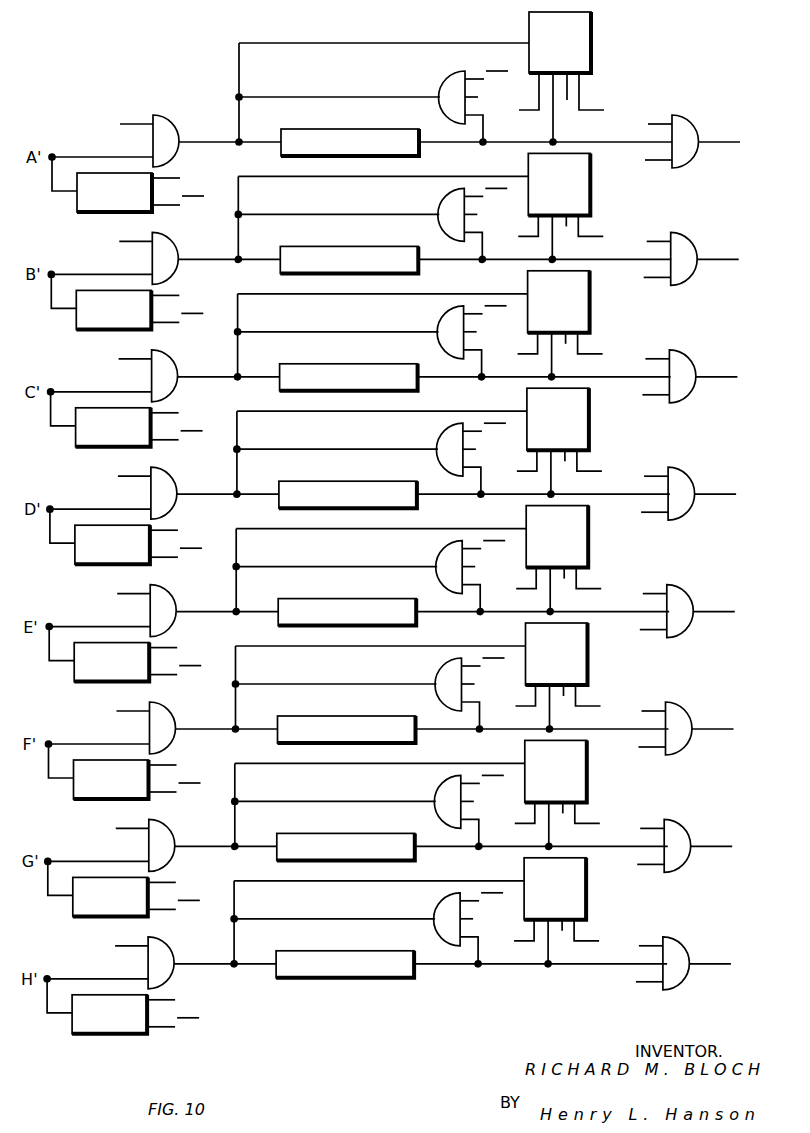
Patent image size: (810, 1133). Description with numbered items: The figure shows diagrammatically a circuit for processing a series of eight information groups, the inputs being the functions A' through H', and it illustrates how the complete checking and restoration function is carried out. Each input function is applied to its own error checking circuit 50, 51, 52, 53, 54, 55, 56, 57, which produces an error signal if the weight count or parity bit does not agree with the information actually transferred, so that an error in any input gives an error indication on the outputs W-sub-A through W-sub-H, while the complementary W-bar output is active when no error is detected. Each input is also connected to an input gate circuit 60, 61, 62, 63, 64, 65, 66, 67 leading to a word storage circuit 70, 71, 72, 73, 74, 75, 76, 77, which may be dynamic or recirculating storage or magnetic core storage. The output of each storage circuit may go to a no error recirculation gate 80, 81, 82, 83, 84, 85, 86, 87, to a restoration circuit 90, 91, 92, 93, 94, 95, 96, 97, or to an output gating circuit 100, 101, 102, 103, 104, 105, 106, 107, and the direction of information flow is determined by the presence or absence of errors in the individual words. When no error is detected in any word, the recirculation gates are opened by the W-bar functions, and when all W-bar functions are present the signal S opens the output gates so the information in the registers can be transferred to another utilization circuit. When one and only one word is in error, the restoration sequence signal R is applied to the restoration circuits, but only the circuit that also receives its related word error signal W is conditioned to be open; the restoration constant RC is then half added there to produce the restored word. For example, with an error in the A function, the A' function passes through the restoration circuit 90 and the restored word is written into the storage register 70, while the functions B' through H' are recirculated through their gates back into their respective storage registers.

The error checking circuit 50 is at (118, 194).
The error checking circuit 51 is at (117, 311).
The error checking circuit 52 is at (117, 429).
The error checking circuit 53 is at (116, 546).
The error checking circuit 54 is at (115, 664).
The error checking circuit 55 is at (114, 781).
The error checking circuit 56 is at (114, 898).
The error checking circuit 57 is at (113, 1016).
The input gate circuit 60 is at (145, 137).
The input gate circuit 61 is at (144, 254).
The input gate circuit 62 is at (144, 372).
The input gate circuit 63 is at (143, 489).
The input gate circuit 64 is at (142, 607).
The input gate circuit 65 is at (142, 724).
The input gate circuit 66 is at (141, 841).
The input gate circuit 67 is at (140, 959).
The word storage circuit 70 is at (350, 129).
The word storage circuit 71 is at (349, 246).
The word storage circuit 72 is at (349, 364).
The word storage circuit 73 is at (348, 481).
The word storage circuit 74 is at (347, 599).
The word storage circuit 75 is at (347, 716).
The word storage circuit 76 is at (346, 833).
The word storage circuit 77 is at (345, 951).
The no error recirculation gate 80 is at (468, 100).
The no error recirculation gate 81 is at (467, 217).
The no error recirculation gate 82 is at (467, 335).
The no error recirculation gate 83 is at (466, 452).
The no error recirculation gate 84 is at (465, 570).
The no error recirculation gate 85 is at (465, 687).
The no error recirculation gate 86 is at (464, 804).
The no error recirculation gate 87 is at (463, 922).
The restoration circuit 90 is at (567, 77).
The restoration circuit 91 is at (566, 206).
The restoration circuit 92 is at (566, 324).
The restoration circuit 93 is at (565, 441).
The restoration circuit 94 is at (564, 559).
The restoration circuit 95 is at (564, 676).
The restoration circuit 96 is at (563, 793).
The restoration circuit 97 is at (562, 911).
The output gating circuit 100 is at (672, 146).
The output gating circuit 101 is at (671, 263).
The output gating circuit 102 is at (669, 381).
The output gating circuit 103 is at (668, 498).
The output gating circuit 104 is at (667, 616).
The output gating circuit 105 is at (666, 733).
The output gating circuit 106 is at (664, 850).
The output gating circuit 107 is at (663, 968).